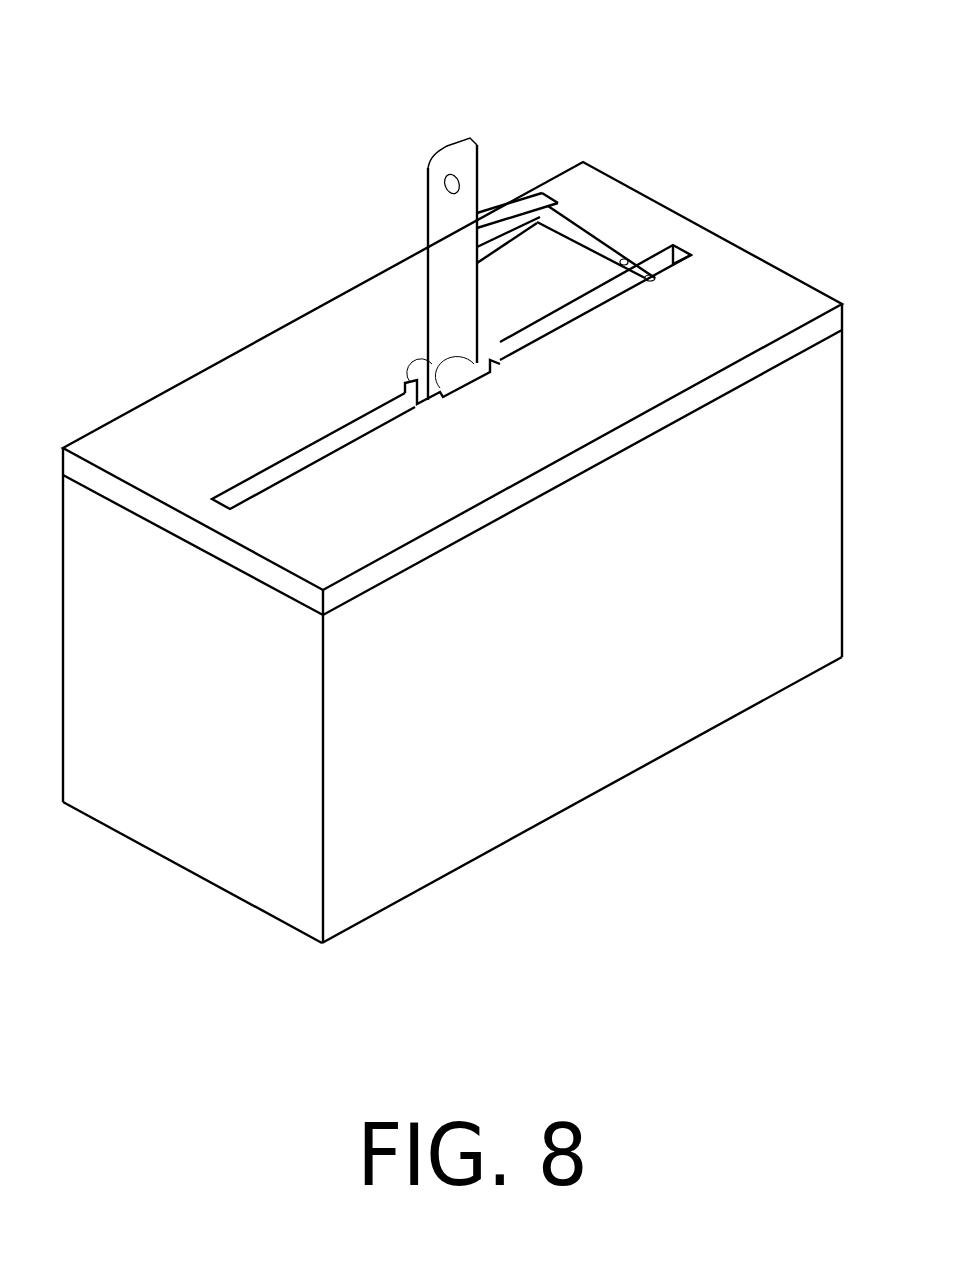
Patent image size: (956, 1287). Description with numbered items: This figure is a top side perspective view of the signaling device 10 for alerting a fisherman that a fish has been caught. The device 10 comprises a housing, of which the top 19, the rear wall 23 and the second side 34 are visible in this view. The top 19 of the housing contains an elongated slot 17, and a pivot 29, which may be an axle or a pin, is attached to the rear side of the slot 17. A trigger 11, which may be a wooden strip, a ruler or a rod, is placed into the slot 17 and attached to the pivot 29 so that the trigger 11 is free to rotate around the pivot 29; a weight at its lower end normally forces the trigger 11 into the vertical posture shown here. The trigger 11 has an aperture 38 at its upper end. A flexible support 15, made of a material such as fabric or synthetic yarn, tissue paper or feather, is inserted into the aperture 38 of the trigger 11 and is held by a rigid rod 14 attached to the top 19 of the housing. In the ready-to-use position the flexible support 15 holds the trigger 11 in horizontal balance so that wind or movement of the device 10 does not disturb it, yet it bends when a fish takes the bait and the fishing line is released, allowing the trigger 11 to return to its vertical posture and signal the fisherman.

The device 10 is at (200, 178).
The trigger 11 is at (512, 207).
The rigid rod 14 is at (570, 230).
The flexible support 15 is at (643, 262).
The slot 17 is at (303, 463).
The top 19 is at (455, 375).
The rear wall 23 is at (482, 770).
The pivot 29 is at (460, 370).
The second side 34 is at (167, 802).
The aperture 38 is at (452, 182).